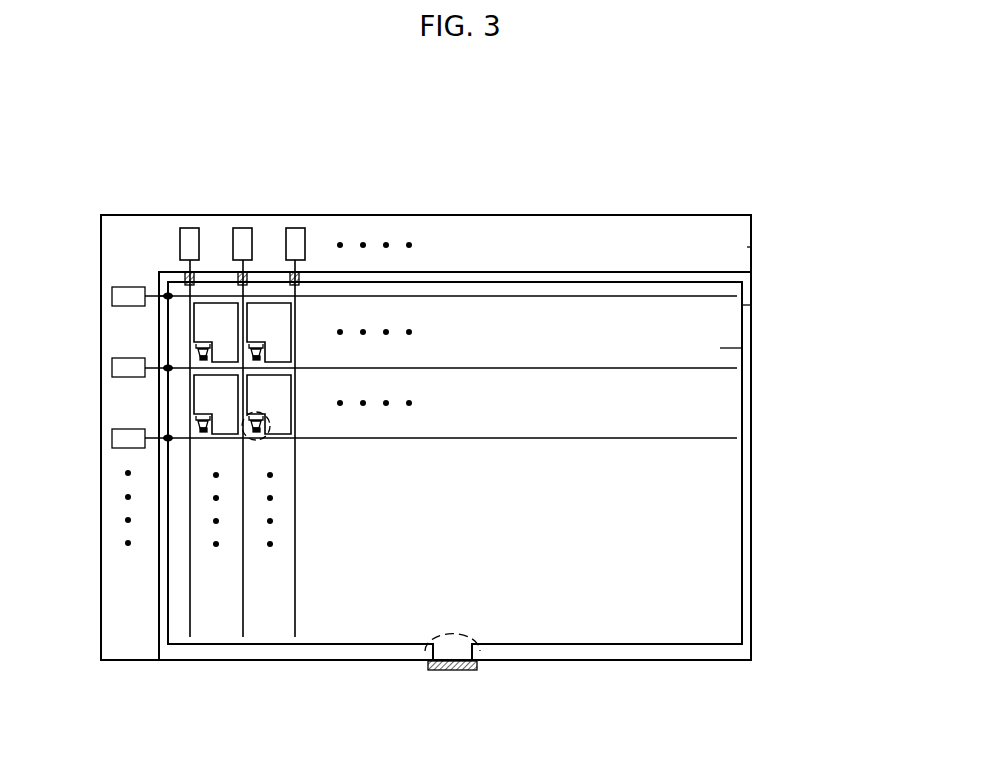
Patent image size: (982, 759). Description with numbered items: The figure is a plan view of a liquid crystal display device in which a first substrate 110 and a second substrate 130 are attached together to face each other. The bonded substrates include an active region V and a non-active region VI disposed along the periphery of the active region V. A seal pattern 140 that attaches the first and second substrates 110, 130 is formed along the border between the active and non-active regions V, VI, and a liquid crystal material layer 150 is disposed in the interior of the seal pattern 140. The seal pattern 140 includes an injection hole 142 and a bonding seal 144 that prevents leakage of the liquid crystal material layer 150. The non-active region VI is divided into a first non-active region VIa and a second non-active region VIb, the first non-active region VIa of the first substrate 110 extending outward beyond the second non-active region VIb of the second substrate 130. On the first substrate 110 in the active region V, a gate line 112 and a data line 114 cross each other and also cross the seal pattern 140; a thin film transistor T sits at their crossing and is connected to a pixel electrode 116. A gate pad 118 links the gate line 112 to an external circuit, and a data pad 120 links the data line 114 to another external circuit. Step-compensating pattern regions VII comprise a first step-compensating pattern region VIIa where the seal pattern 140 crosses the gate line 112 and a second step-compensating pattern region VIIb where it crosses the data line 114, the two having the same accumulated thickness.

The first substrate 110 is at (101, 594).
The gate line 112 is at (390, 440).
The data line 114 is at (298, 555).
The pixel electrode 116 is at (293, 387).
The gate pad 118 is at (112, 438).
The data pad 120 is at (185, 237).
The second substrate 130 is at (159, 622).
The seal pattern 140 is at (213, 645).
The injection hole 142 is at (452, 632).
The bonding seal 144 is at (452, 672).
The liquid crystal material layer 150 is at (706, 583).
The thin film transistor T is at (255, 441).
The active region V is at (720, 348).
The non-active region VI is at (843, 252).
The first non-active region VIa is at (747, 247).
The second non-active region VIb is at (744, 309).
The step-compensating pattern regions VII is at (133, 163).
The first step-compensating pattern region VIIa is at (165, 294).
The second step-compensating pattern region VIIb is at (188, 276).